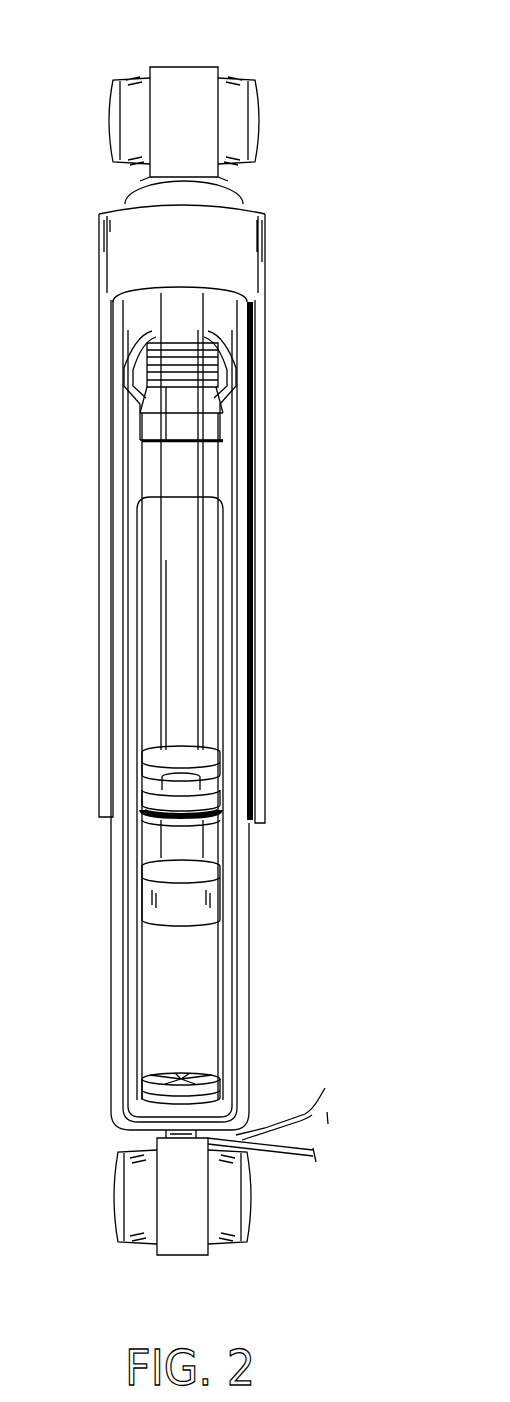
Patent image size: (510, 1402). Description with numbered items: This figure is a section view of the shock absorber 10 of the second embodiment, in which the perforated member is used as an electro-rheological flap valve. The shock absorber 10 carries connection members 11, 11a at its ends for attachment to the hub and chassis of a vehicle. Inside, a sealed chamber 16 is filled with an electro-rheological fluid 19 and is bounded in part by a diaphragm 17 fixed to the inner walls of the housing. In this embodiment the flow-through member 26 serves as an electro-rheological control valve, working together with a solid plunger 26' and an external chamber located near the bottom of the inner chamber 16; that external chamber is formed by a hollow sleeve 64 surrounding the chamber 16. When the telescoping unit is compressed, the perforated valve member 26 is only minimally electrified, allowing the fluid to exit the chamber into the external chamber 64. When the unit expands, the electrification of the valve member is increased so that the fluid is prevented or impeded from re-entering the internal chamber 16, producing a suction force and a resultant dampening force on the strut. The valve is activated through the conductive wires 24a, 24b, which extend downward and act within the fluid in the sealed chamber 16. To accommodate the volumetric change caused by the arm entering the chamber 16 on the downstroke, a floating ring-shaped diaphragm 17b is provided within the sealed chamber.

The shock absorber 10 is at (372, 667).
The connection member 11 is at (183, 85).
The connection member 11a is at (168, 1230).
The sealed chamber 16 is at (200, 997).
The diaphragm 17 is at (210, 757).
The floating ring-shaped diaphragm 17b is at (210, 796).
The electro-rheological fluid 19 is at (190, 1040).
The conducting wire 24a is at (307, 1158).
The connecting wire 24b is at (325, 1090).
The perforated dampening member 26 is at (126, 1086).
The solid plunger 26' is at (243, 893).
The hollow sleeve 64 is at (132, 972).